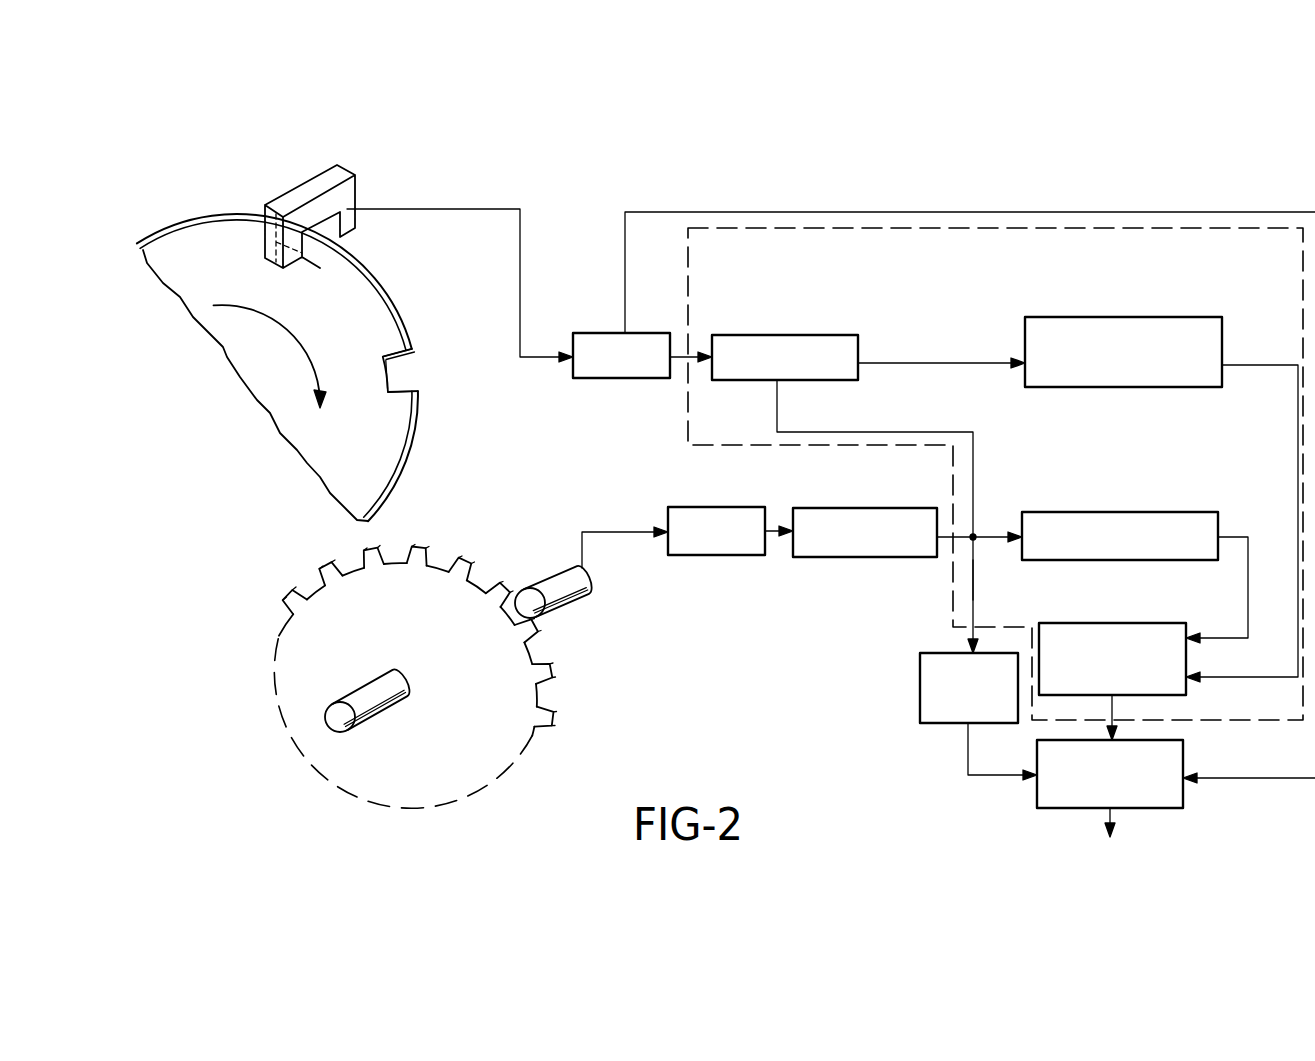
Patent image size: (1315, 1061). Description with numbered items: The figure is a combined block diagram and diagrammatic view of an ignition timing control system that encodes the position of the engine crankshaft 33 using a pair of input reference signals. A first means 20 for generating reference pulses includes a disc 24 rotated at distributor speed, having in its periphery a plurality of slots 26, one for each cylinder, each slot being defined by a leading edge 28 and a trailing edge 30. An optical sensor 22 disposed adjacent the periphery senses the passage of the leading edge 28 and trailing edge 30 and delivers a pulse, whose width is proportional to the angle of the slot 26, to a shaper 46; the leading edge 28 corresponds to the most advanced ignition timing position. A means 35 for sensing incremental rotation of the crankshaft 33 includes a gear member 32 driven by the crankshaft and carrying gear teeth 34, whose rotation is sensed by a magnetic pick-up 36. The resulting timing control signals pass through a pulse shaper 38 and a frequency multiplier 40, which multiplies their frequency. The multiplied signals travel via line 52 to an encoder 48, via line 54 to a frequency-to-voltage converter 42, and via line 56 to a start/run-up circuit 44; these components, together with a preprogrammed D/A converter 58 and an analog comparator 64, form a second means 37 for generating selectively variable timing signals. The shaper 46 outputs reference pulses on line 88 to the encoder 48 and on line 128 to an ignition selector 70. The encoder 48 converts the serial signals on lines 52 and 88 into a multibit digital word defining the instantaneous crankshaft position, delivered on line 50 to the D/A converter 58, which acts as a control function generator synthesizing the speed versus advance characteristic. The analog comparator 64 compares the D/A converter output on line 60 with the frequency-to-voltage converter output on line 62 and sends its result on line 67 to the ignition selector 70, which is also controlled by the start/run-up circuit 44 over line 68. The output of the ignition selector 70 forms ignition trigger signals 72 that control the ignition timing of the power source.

The first means for generating reference pulses 20 is at (447, 176).
The optical sensor 22 is at (314, 185).
The disc 24 is at (206, 282).
The slot 26 is at (426, 376).
The leading edge 28 is at (392, 402).
The trailing edge 30 is at (386, 348).
The gear member 32 is at (457, 656).
The crankshaft 33 is at (384, 682).
The gear teeth 34 is at (462, 557).
The means for sensing incremental rotation 35 is at (606, 721).
The magnetic pick-up 36 is at (588, 598).
The second means for generating selectively variable timing signals 37 is at (687, 425).
The pulse shaper 38 is at (735, 490).
The frequency multiplier 40 is at (870, 488).
The frequency-to-voltage converter 42 is at (1113, 492).
The start/run-up circuit 44 is at (920, 675).
The shaper 46 is at (580, 333).
The encoder 48 is at (796, 320).
The line 50 is at (930, 338).
The line 52 is at (922, 410).
The line 54 is at (990, 535).
The line 56 is at (973, 604).
The preprogrammed D/A converter 58 is at (1152, 318).
The line 60 is at (1225, 682).
The line 62 is at (1248, 604).
The analog comparator 64 is at (1143, 623).
The line 67 is at (1112, 710).
The line 68 is at (966, 750).
The ignition selector 70 is at (1185, 800).
The ignition trigger signals 72 is at (1148, 887).
The line 88 is at (680, 355).
The line 128 is at (708, 187).